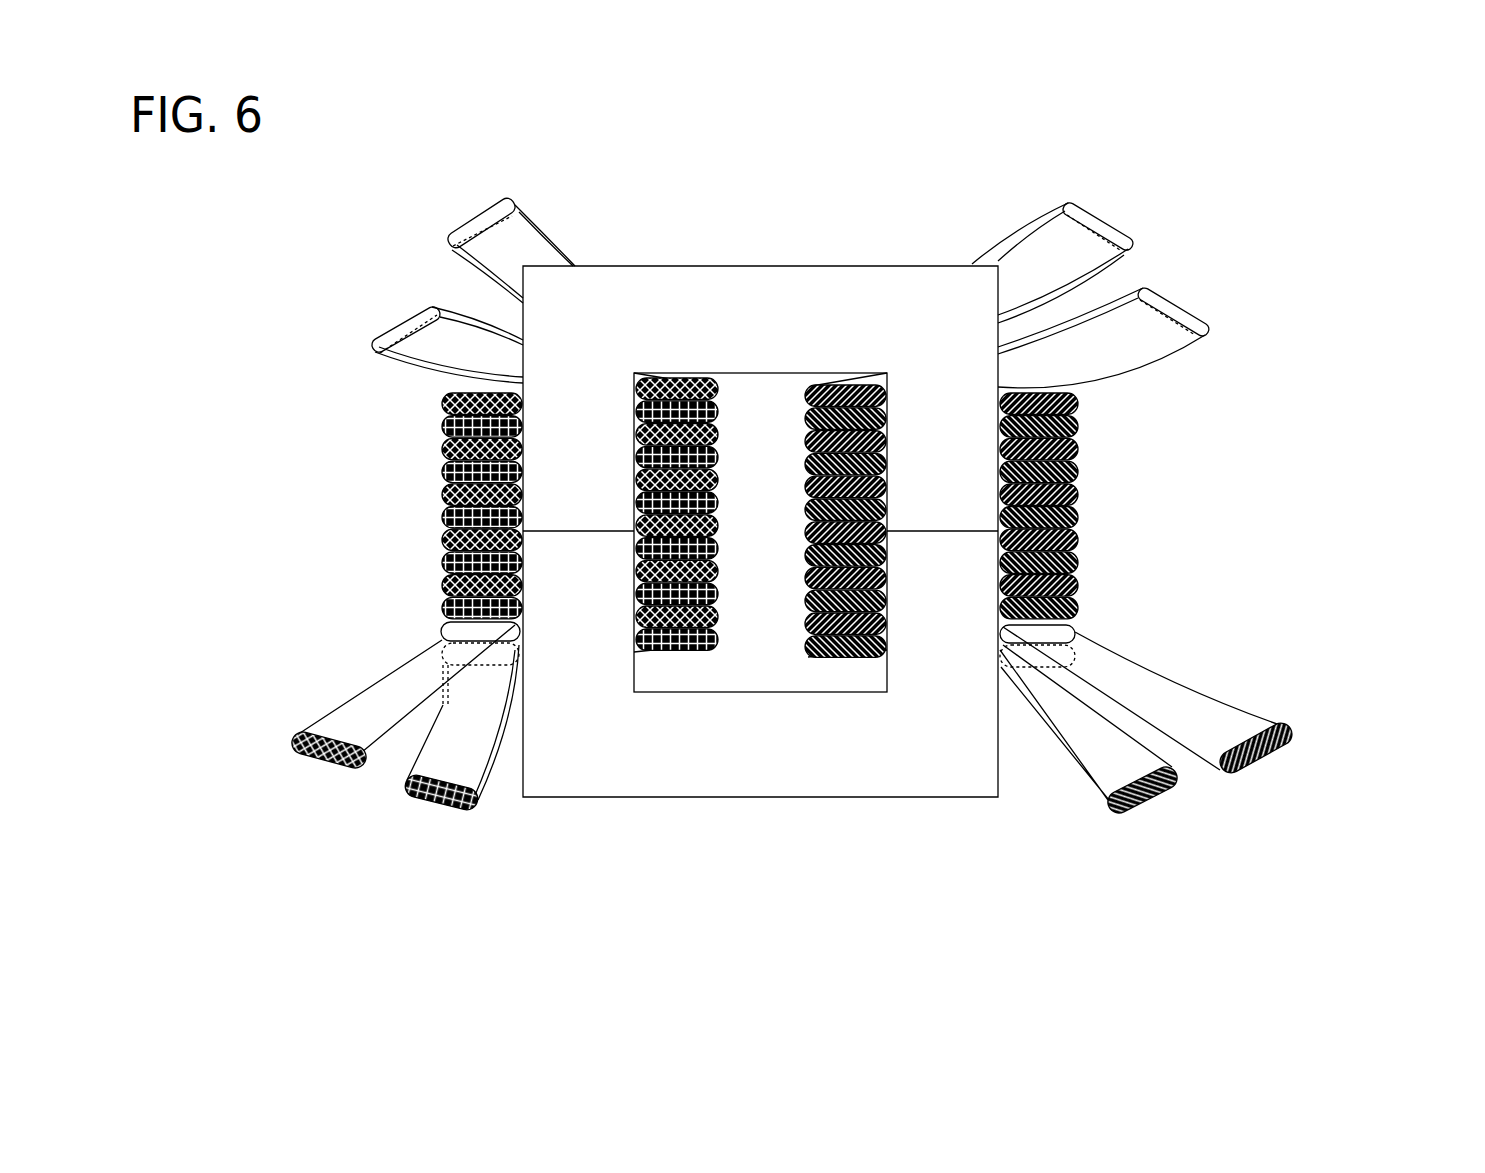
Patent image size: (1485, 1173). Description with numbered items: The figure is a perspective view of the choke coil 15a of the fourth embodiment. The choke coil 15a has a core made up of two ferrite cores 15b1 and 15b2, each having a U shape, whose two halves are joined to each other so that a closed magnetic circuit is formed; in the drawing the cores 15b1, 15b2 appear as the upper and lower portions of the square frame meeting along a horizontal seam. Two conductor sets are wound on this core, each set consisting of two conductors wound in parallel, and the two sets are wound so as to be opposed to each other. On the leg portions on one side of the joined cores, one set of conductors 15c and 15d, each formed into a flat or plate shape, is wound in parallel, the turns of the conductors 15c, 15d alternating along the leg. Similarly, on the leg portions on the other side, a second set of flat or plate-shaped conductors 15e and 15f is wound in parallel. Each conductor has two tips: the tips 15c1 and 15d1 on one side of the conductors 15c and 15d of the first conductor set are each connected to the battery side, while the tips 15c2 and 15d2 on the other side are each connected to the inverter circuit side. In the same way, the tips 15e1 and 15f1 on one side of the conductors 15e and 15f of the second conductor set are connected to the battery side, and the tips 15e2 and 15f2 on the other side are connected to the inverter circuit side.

The choke coil 15a is at (757, 230).
The core 15b1 is at (827, 277).
The core 15b2 is at (697, 795).
The conductor 15c is at (442, 588).
The conductor 15d is at (440, 614).
The conductor 15e is at (1078, 588).
The conductor 15f is at (1078, 613).
The tip 15c1 is at (308, 758).
The tip 15c2 is at (458, 216).
The tip 15d1 is at (453, 808).
The tip 15d2 is at (385, 323).
The tip 15e1 is at (1290, 745).
The tip 15e2 is at (1127, 226).
The tip 15f1 is at (1150, 800).
The tip 15f2 is at (1208, 313).